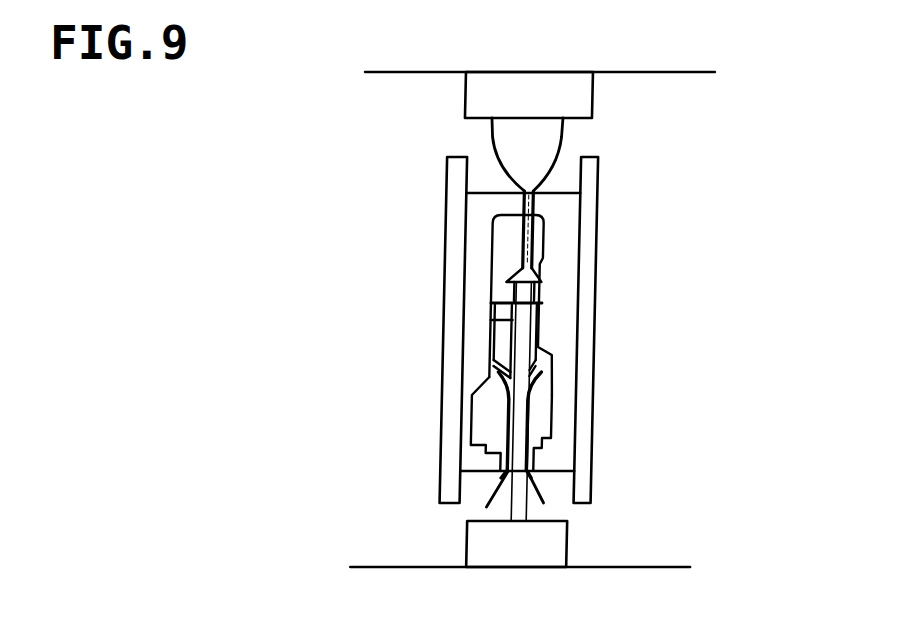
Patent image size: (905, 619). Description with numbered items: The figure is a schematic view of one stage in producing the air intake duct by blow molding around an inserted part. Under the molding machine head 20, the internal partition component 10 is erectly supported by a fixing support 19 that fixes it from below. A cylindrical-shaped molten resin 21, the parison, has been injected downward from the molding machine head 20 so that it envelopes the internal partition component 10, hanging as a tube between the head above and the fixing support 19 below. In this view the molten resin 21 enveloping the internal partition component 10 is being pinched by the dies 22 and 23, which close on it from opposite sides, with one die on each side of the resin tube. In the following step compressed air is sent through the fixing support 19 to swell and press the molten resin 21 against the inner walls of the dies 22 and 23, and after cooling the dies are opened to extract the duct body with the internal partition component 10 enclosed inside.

The internal partition component 10 is at (523, 320).
The fixing support 19 is at (513, 508).
The molding machine head 20 is at (577, 103).
The molten resin 21 is at (550, 400).
The die 22 is at (472, 316).
The die 23 is at (562, 338).